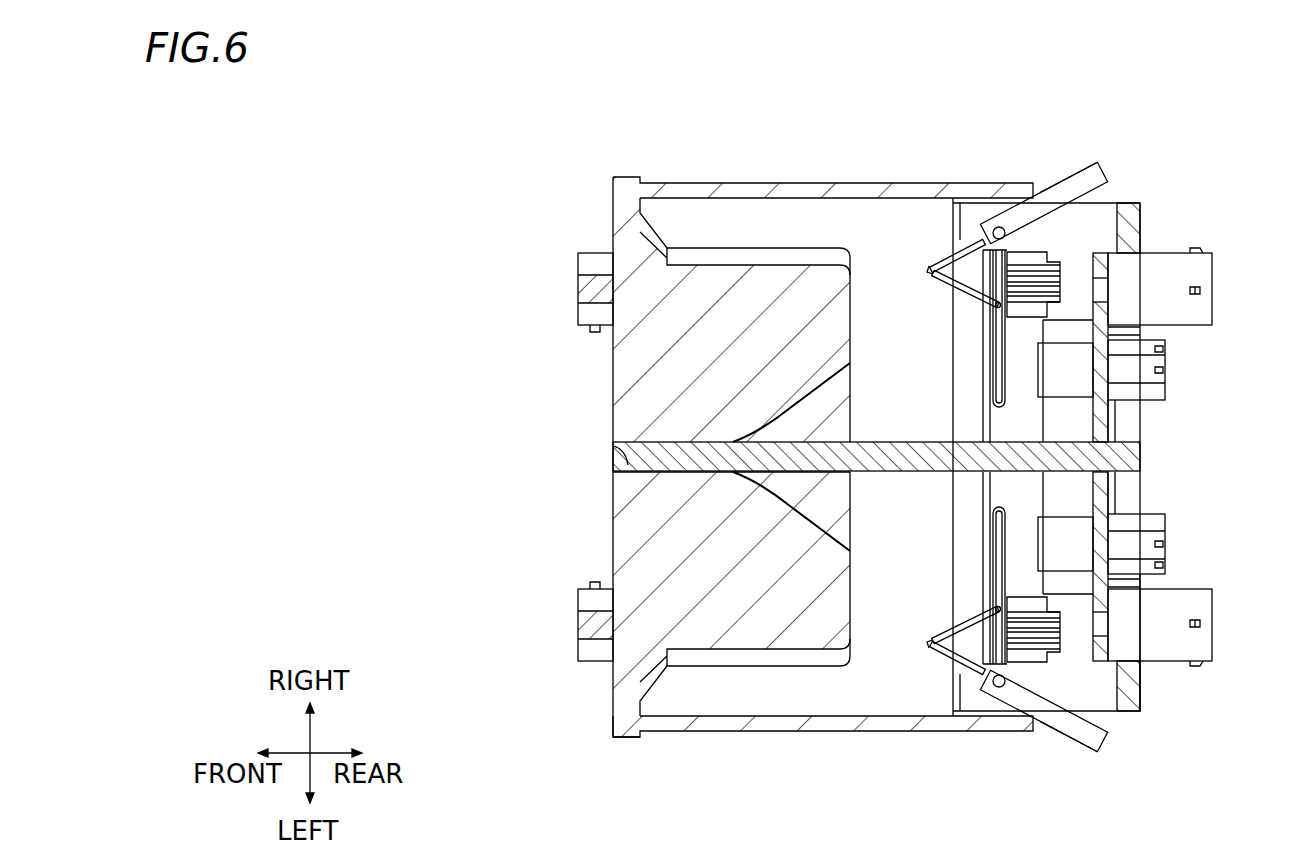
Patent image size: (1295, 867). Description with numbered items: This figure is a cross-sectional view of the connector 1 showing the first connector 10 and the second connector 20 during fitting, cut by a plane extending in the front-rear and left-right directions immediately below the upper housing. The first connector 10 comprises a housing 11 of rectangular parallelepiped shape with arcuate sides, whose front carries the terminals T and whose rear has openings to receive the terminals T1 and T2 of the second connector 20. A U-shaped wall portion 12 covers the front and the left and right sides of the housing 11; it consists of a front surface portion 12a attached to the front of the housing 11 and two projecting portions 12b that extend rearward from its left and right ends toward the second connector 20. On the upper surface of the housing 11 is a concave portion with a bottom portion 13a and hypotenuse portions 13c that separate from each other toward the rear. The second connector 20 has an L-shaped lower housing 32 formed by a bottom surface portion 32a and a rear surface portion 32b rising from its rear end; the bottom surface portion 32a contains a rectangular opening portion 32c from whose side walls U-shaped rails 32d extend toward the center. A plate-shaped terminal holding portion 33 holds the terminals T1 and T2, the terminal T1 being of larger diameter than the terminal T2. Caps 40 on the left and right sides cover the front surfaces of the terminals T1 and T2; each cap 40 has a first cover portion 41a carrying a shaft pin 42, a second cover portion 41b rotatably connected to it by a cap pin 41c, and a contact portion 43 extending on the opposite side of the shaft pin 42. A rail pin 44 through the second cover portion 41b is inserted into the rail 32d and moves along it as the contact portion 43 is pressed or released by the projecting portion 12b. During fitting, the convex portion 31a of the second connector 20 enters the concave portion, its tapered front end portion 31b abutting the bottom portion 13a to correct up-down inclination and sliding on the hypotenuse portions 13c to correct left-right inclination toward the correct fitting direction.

The connector 1 is at (585, 172).
The first connector 10 is at (598, 516).
The housing 11 is at (803, 632).
The wall portion 12 is at (657, 188).
The front surface portion 12a is at (620, 722).
The projecting portion 12b is at (863, 190).
The bottom portion 13a is at (835, 493).
The hypotenuse portion 13c is at (817, 390).
The convex portion 31a is at (918, 453).
The front end portion 31b is at (628, 462).
The terminal T is at (578, 268).
The second connector 20 is at (1168, 725).
The lower housing 32 is at (1108, 207).
The bottom surface portion 32a is at (1118, 736).
The rear surface portion 32b is at (1132, 682).
The opening portion 32c is at (1040, 492).
The rail 32d is at (993, 362).
The terminal holding portion 33 is at (1100, 433).
The cap 40 is at (1093, 176).
The first cover portion 41a is at (950, 259).
The second cover portion 41b is at (965, 290).
The cap pin 41c is at (930, 270).
The shaft pin 42 is at (986, 222).
The contact portion 43 is at (1057, 200).
The rail pin 44 is at (992, 308).
The terminal T1 is at (1203, 271).
The terminal T2 is at (1165, 386).